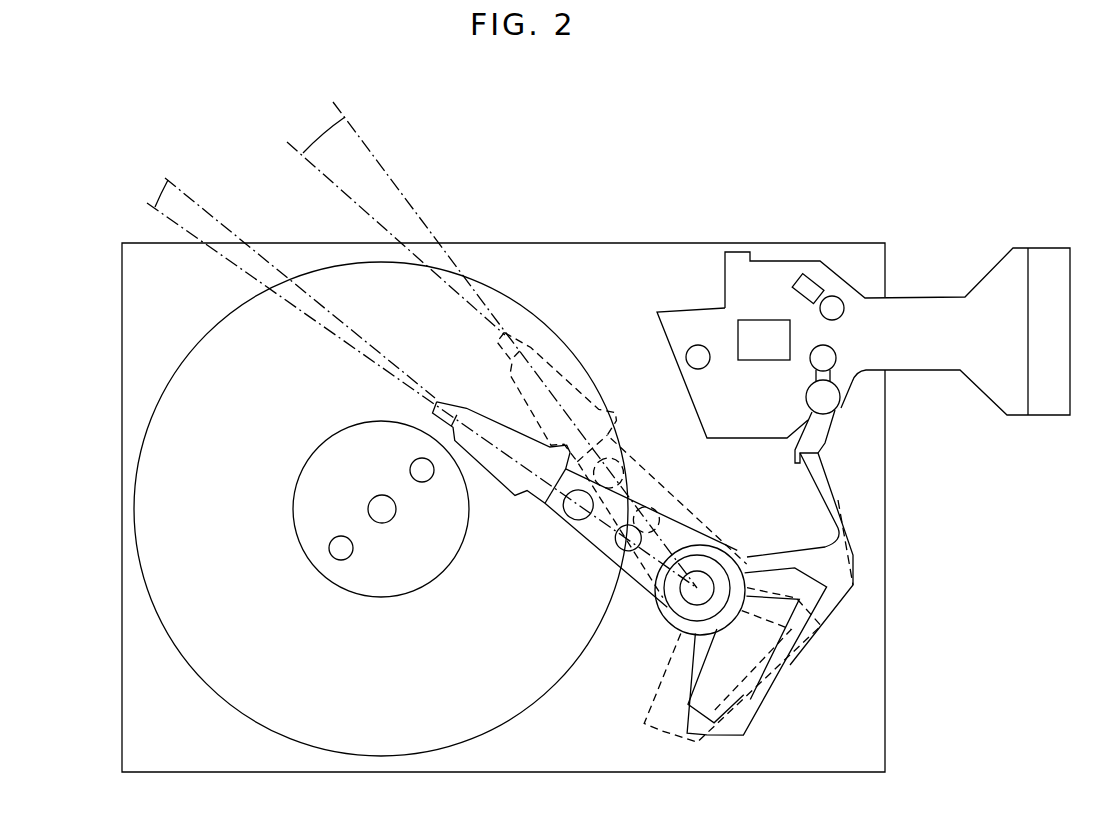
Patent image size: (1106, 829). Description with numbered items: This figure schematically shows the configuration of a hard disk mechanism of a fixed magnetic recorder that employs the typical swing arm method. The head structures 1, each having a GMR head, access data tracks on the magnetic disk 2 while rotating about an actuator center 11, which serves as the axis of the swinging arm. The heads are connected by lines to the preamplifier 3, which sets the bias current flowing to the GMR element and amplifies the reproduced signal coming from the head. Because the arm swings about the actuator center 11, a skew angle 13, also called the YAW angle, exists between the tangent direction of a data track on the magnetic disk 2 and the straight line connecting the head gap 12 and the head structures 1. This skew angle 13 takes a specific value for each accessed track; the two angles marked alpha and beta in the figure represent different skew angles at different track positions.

The head structure 1 is at (432, 391).
The magnetic disk 2 is at (215, 619).
The preamplifier 3 is at (767, 320).
The actuator center 11 is at (703, 580).
The head gap 12 is at (561, 468).
The skew angle 13 is at (295, 117).